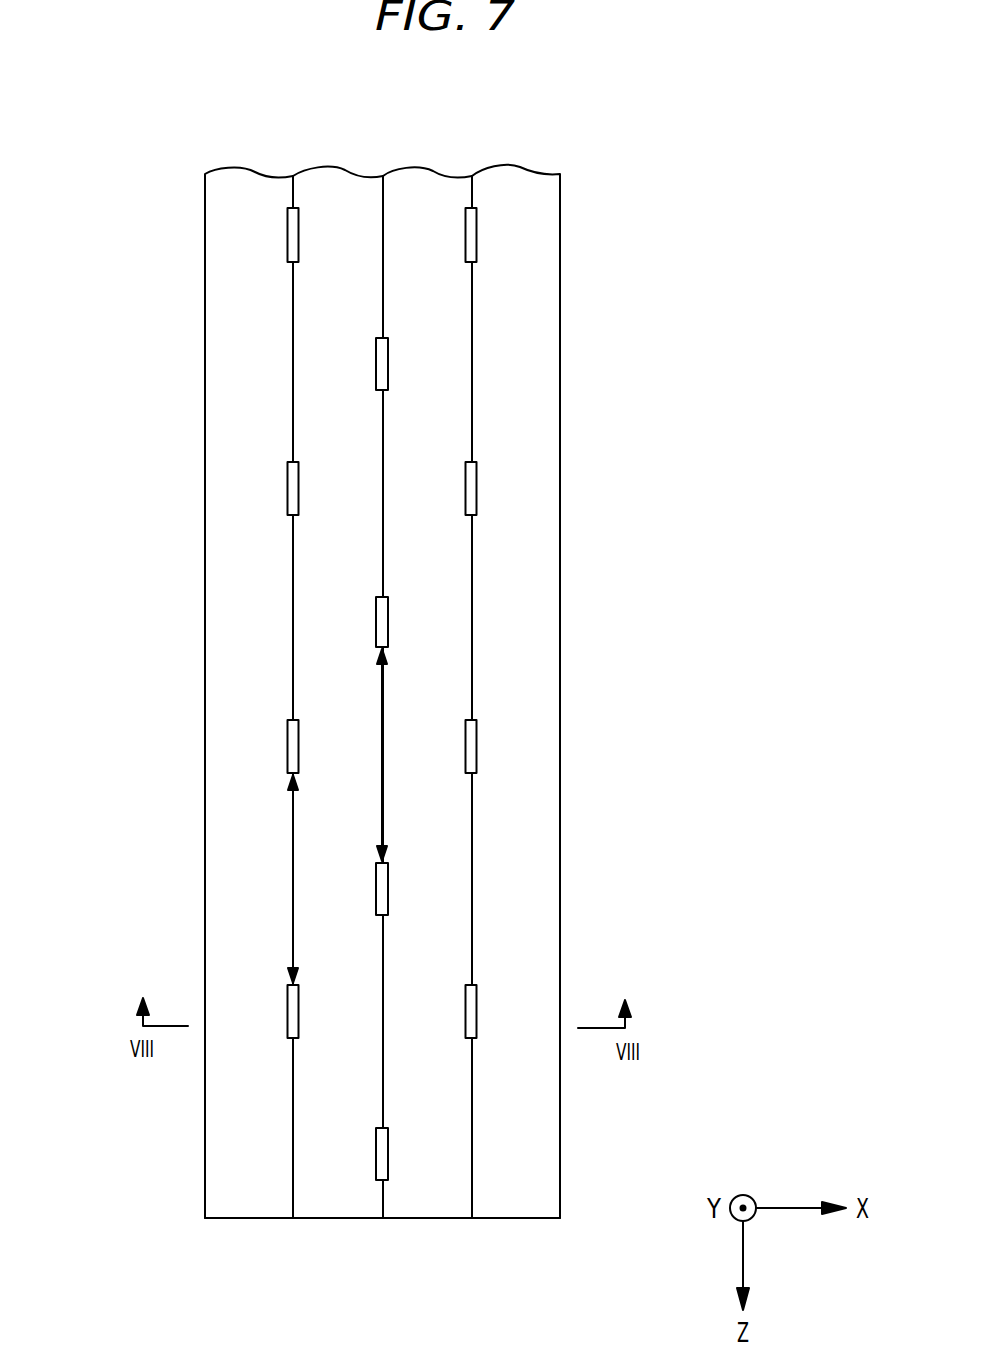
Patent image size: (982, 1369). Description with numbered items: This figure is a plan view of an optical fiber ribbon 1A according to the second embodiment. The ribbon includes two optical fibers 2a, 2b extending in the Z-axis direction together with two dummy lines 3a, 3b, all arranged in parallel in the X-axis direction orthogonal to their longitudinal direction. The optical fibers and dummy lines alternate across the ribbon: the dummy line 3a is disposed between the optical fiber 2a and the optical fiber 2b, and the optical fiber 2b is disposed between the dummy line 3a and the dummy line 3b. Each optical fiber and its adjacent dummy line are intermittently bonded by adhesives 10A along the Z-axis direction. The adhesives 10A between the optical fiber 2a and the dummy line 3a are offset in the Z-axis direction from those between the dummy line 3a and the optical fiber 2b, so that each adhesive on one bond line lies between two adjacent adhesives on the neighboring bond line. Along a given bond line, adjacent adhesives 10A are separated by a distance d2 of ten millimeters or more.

The optical fiber ribbon 1A is at (162, 228).
The optical fiber 2a is at (251, 1220).
The dummy line 3a is at (349, 1220).
The optical fiber 2b is at (433, 1220).
The dummy line 3b is at (528, 1220).
The adhesive 10A is at (300, 1017).
The distance between adhesives d2 is at (294, 870).